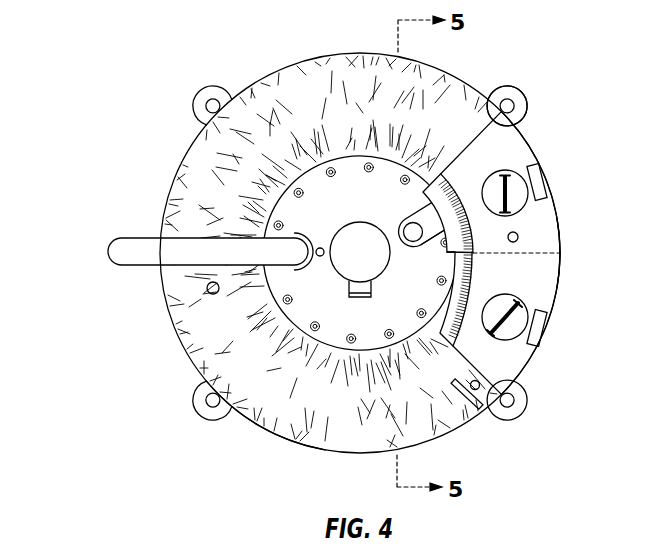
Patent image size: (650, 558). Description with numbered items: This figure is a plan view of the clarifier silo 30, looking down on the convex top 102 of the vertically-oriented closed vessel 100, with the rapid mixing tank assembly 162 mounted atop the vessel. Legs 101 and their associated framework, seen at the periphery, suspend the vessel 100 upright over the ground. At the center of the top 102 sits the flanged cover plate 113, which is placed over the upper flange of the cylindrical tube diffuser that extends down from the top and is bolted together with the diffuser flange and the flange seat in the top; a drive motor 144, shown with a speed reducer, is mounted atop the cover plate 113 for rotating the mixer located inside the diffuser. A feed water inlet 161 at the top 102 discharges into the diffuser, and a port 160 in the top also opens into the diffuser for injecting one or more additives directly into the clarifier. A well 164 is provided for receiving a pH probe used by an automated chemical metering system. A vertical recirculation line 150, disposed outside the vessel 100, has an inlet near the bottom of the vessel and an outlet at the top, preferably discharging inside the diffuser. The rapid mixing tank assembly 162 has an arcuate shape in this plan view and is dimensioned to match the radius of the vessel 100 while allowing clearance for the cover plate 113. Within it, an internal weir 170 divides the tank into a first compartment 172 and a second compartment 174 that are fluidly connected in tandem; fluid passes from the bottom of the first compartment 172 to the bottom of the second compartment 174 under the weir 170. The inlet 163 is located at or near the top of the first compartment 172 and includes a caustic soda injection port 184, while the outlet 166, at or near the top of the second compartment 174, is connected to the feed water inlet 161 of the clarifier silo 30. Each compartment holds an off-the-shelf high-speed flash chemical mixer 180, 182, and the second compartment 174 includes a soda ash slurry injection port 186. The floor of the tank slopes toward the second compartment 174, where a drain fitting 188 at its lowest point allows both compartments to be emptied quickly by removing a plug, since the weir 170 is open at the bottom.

The clarifier silo 30 is at (258, 427).
The vessel 100 is at (187, 153).
The legs 101 is at (207, 405).
The convex top 102 is at (180, 210).
The flanged cover plate 113 is at (370, 353).
The drive motor 144 is at (330, 275).
The recirculation line 150 is at (112, 238).
The port 160 is at (316, 249).
The feed water inlet 161 is at (412, 217).
The rapid mixing tank assembly 162 is at (560, 241).
The inlet 163 is at (466, 398).
The well 164 is at (207, 290).
The outlet 166 is at (428, 252).
The internal weir 170 is at (547, 257).
The first compartment 172 is at (542, 300).
The second compartment 174 is at (508, 140).
The high-speed flash chemical mixer 180 is at (510, 345).
The high-speed flash chemical mixer 182 is at (515, 167).
The caustic soda injection port 184 is at (515, 407).
The soda ash slurry injection port 186 is at (518, 234).
The drain fitting 188 is at (523, 110).